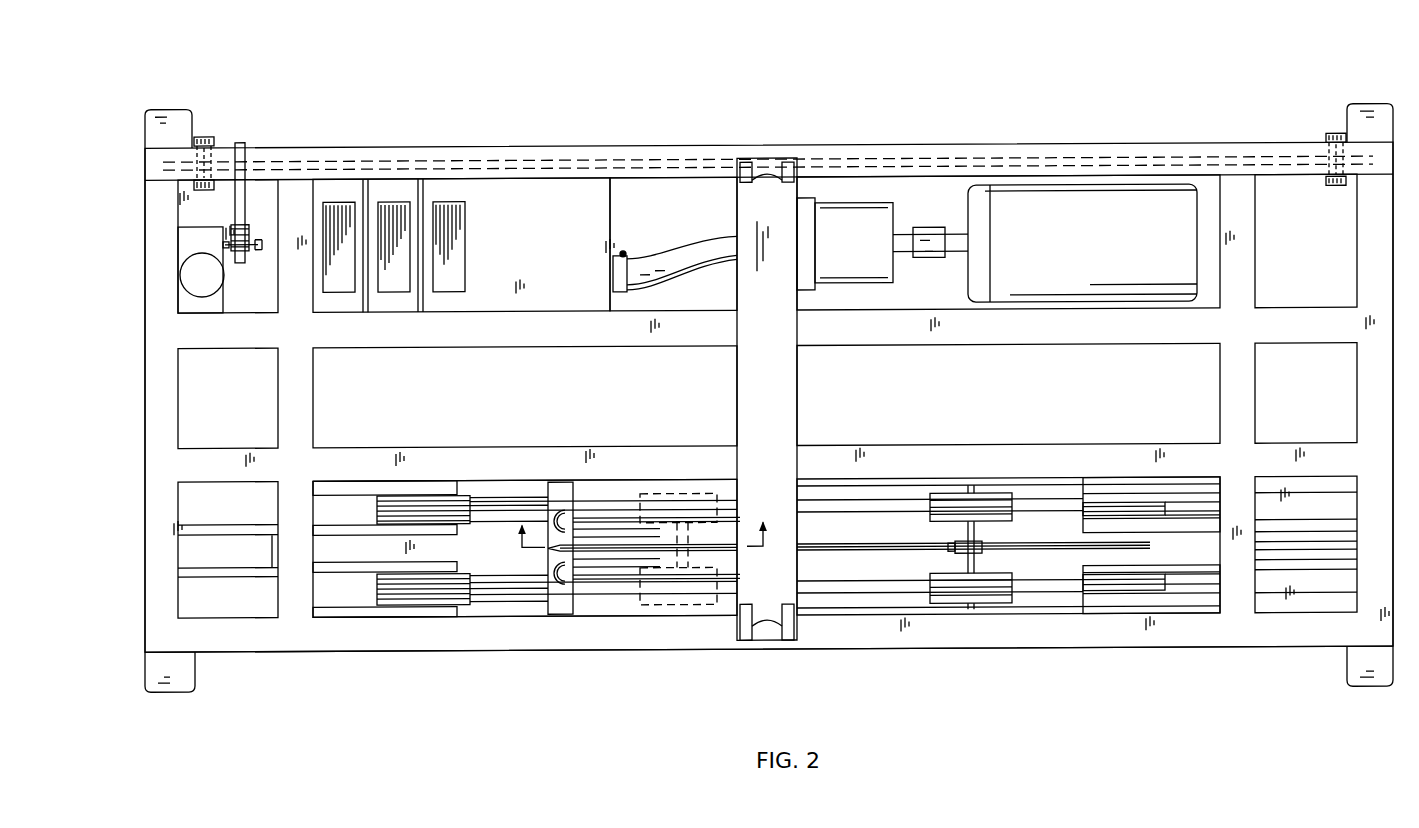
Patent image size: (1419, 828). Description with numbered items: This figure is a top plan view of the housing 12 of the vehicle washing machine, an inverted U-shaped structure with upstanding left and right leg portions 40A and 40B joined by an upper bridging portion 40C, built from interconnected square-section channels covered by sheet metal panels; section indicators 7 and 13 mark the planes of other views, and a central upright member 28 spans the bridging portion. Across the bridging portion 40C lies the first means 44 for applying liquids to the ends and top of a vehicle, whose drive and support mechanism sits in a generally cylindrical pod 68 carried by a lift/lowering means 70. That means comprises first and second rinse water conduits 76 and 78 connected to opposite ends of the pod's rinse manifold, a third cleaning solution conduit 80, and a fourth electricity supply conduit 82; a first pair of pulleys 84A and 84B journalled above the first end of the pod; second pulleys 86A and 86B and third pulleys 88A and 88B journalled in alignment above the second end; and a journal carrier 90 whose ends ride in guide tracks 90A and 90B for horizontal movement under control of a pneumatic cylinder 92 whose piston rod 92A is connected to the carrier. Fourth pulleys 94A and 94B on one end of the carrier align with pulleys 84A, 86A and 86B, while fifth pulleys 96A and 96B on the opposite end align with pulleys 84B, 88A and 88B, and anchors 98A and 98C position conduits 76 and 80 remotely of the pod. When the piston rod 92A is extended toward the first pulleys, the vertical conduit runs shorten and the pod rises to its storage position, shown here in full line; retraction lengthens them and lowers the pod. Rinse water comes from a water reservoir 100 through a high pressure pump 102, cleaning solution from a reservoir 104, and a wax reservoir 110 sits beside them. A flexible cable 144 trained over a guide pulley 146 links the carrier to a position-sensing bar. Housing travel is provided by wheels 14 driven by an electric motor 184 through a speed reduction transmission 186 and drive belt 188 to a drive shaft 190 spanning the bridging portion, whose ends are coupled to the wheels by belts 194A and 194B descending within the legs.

The section line 7- 7 is at (1208, 138).
The housing 12 is at (384, 146).
The section line 13- 13 is at (641, 544).
The wheels 14 is at (166, 106).
The central column 28 is at (753, 176).
The left leg portion 40A is at (1398, 629).
The right leg portion 40B is at (141, 636).
The upper or bridging portion 40C is at (868, 144).
The first means 44 is at (659, 436).
The pod 68 is at (910, 612).
The lift/lowering means 70 is at (471, 634).
The first rinse water supply flexible conduit 76 is at (518, 497).
The second rinse water supply flexible conduit 78 is at (478, 497).
The third cleaning solution supply flexible conduit 80 is at (490, 596).
The fourth flexible electricity supply conduit 82 is at (537, 600).
The first rotatable pulley 84A is at (1128, 500).
The first rotatable pulley 84B is at (1140, 585).
The second rotatable pulley 86A is at (378, 500).
The second rotatable pulley 86B is at (378, 526).
The third rotatable pulley 88A is at (346, 600).
The third rotatable pulley 88B is at (385, 600).
The journal carrier 90 is at (1032, 550).
The guide track 90A is at (918, 498).
The guide track 90B is at (863, 592).
The pneumatic cylinder 92 is at (340, 600).
The piston rod 92A is at (833, 549).
The fourth rotatable pulley 94A is at (712, 525).
The fourth rotatable pulley 94B is at (752, 525).
The fifth rotatable pulley 96A is at (628, 590).
The fifth rotatable pulley 96B is at (668, 600).
The first anchor 98A is at (553, 523).
The third anchor 98C is at (552, 592).
The water reservoir 100 is at (555, 249).
The high pressure pump 102 is at (868, 249).
The cleaning solution reservoir 104 is at (394, 204).
The wax reservoir 110 is at (325, 204).
The flexible cable or strap 144 is at (1190, 542).
The guide pulley 146 is at (1352, 550).
The electric motor 184 is at (192, 282).
The speed reduction transmission 186 is at (180, 248).
The drive belt 188 is at (246, 208).
The drive shaft 190 is at (622, 164).
The belt 194A is at (1333, 191).
The belt 194B is at (202, 134).